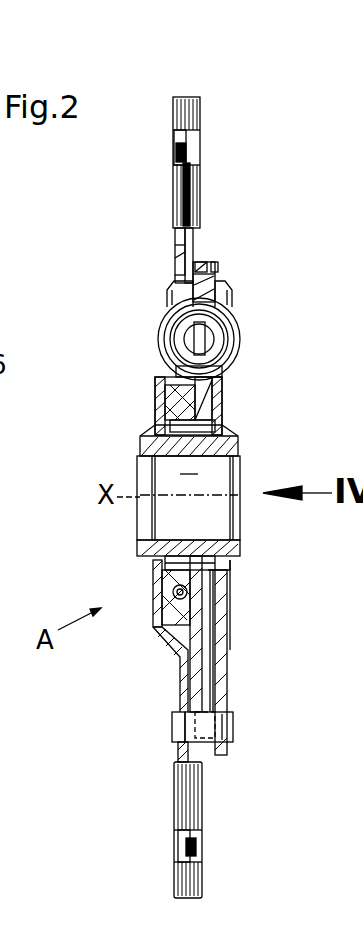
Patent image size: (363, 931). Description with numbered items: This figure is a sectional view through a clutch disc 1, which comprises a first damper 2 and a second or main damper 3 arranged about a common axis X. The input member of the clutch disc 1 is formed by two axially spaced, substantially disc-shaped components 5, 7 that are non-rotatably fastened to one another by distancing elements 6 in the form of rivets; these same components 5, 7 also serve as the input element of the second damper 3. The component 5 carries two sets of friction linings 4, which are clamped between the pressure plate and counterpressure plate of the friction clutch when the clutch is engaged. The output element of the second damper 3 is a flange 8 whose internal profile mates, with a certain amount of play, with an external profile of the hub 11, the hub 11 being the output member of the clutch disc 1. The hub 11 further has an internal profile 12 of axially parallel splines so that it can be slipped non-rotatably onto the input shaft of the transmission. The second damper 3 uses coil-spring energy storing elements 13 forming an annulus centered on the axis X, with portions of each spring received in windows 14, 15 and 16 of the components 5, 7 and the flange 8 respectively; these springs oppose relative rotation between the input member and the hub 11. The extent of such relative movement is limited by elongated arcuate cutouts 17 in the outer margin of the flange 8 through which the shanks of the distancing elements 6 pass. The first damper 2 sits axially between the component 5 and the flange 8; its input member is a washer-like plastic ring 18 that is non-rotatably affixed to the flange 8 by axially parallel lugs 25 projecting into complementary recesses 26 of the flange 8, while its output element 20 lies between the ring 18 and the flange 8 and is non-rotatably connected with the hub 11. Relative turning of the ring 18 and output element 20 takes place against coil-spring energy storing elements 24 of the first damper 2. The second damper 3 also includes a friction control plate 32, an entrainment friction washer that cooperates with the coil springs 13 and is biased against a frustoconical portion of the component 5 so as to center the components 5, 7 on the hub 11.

The clutch disc 1 is at (242, 157).
The first damper 2 is at (150, 604).
The second damper 3 is at (256, 304).
The friction linings 4 is at (178, 97).
The disc-shaped component 5 is at (176, 262).
The distancing elements 6 is at (205, 745).
The disc-shaped component 7 is at (216, 292).
The flange 8 is at (200, 290).
The hub 11 is at (240, 548).
The internal profile 12 is at (242, 466).
The energy storing elements 13 is at (240, 328).
The windows 14 is at (156, 374).
The windows 15 is at (234, 370).
The windows 16 is at (224, 296).
The arcuate cutouts 17 is at (238, 708).
The ring 18 is at (152, 650).
The output element 20 is at (156, 413).
The energy storing elements 24 is at (158, 588).
The lugs 25 is at (156, 392).
The recesses 26 is at (224, 393).
The friction control plate 32 is at (148, 452).